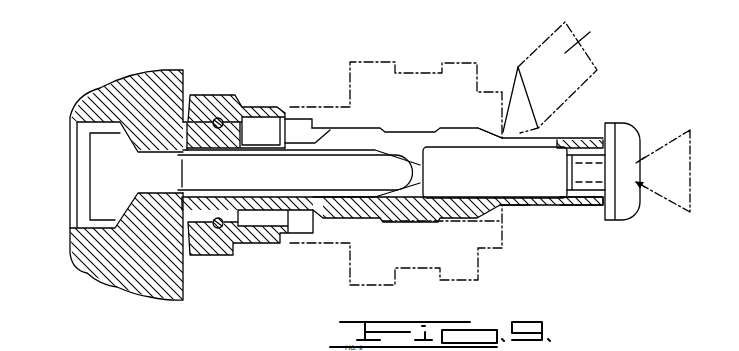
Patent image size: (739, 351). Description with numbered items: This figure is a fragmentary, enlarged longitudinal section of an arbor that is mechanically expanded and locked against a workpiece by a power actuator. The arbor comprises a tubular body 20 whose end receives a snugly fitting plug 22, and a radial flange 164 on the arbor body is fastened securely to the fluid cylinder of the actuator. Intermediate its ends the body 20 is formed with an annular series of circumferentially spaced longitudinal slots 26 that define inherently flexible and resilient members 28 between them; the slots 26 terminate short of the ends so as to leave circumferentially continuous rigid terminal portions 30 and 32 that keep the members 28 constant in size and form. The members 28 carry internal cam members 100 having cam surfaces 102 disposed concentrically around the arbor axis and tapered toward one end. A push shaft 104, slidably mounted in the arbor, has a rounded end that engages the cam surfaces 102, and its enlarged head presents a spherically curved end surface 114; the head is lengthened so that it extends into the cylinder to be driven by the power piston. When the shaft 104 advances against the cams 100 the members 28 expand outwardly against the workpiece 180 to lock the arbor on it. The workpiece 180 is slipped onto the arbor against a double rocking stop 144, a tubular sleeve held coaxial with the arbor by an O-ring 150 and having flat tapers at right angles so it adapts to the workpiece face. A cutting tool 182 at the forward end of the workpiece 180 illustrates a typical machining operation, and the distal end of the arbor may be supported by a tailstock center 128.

The radial flange 164 is at (143, 52).
The spherically curved end surface 114 is at (80, 185).
The double rocking stop 144 is at (216, 84).
The rigid terminal portion 32 is at (245, 150).
The O-ring 150 is at (217, 232).
The push shaft 104 is at (296, 183).
The internal cam member 100 is at (425, 100).
The longitudinal slot 26 is at (485, 113).
The cam surface 102 is at (422, 168).
The plug 22 is at (628, 214).
The tailstock center 128 is at (662, 133).
The rigid terminal portion 30 is at (590, 204).
The flexible member 28 is at (522, 203).
The workpiece 180 is at (377, 67).
The cutting tool 182 is at (587, 33).
The tubular body 20 is at (588, 117).